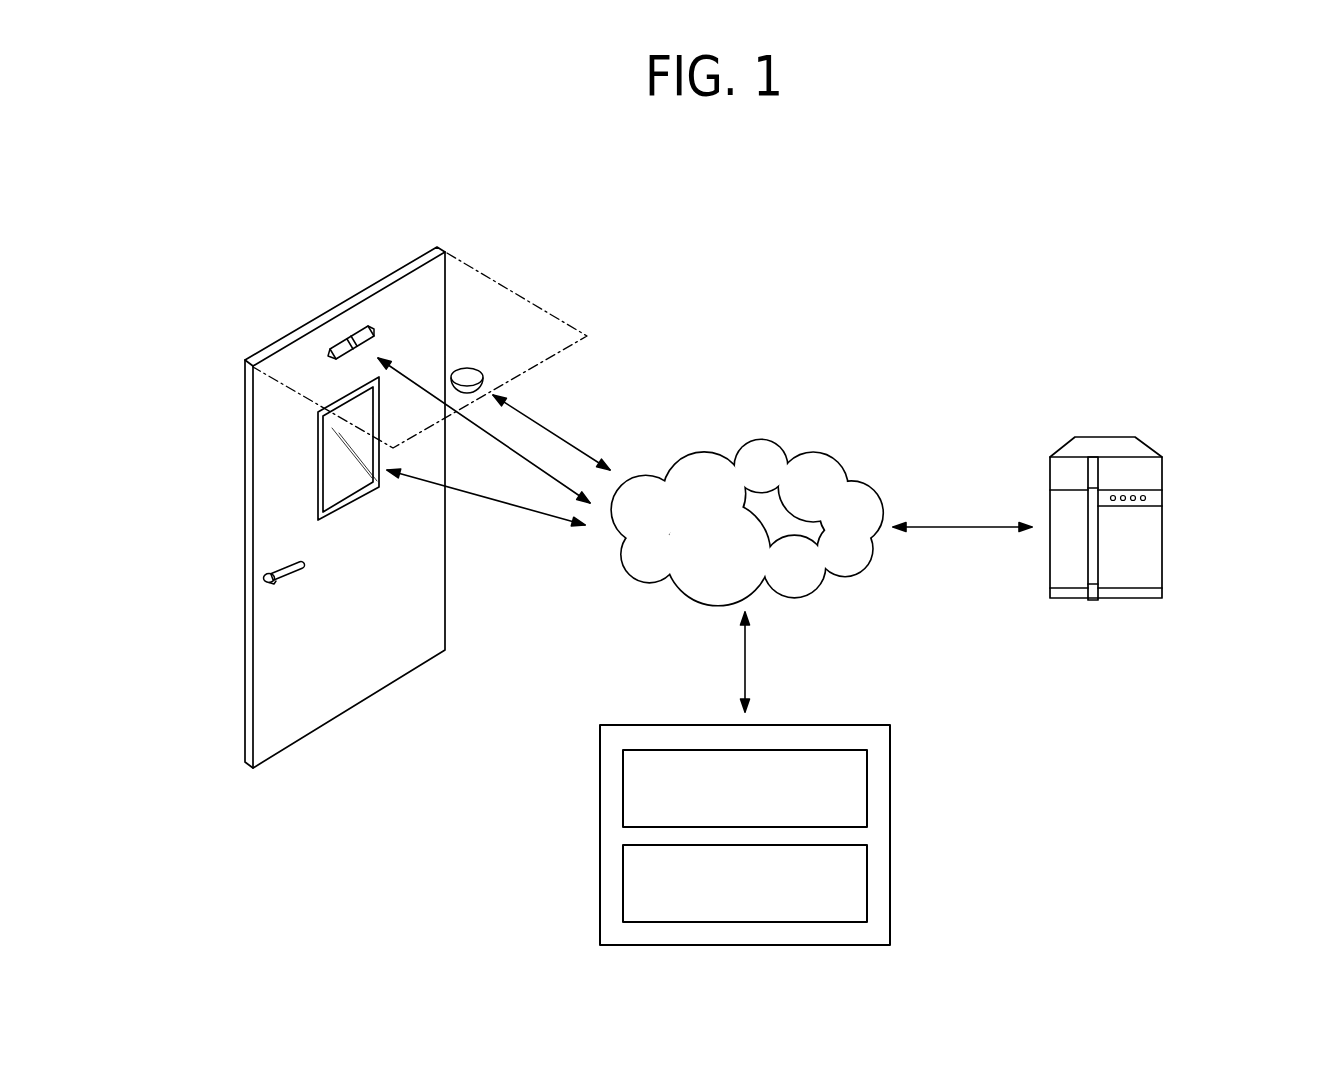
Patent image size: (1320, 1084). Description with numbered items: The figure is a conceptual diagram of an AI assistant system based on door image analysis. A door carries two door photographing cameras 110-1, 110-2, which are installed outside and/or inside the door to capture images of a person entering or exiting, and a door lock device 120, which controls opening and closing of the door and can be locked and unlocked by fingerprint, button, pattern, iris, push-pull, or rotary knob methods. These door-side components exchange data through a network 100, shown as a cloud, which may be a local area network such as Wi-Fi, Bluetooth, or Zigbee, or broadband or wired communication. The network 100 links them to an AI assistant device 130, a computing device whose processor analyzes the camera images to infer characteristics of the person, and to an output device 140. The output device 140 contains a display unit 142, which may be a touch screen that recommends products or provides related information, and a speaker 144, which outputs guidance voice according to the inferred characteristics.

The network 100 is at (762, 440).
The door photographing camera 110-1 is at (345, 342).
The door photographing camera 110-2 is at (467, 376).
The door lock device 120 is at (332, 455).
The AI assistant device 130 is at (1105, 437).
The output device 140 is at (796, 835).
The display unit 142 is at (867, 785).
The speaker 144 is at (867, 880).